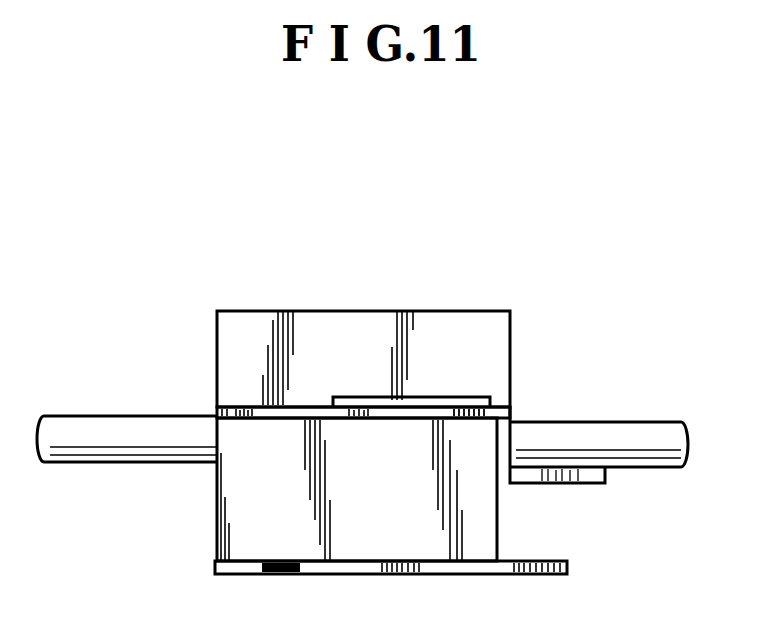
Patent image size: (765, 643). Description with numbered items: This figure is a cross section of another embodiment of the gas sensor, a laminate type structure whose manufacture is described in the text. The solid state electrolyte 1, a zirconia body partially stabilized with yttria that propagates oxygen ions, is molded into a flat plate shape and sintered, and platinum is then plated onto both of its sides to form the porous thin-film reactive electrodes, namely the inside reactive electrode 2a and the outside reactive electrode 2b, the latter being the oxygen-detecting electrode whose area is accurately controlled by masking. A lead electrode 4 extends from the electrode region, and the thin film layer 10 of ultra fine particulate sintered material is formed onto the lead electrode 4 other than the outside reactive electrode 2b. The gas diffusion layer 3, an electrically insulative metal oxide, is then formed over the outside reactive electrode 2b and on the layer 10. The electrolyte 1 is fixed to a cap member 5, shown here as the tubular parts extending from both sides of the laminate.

The solid state electrolyte 1 is at (250, 511).
The inside reactive electrode 2a is at (320, 569).
The outside reactive electrode 2b is at (252, 407).
The gas diffusion layer 3 is at (253, 330).
The lead electrode 4 is at (488, 414).
The cap member 5 is at (77, 430).
The thin film layer of ultra fine particulate sintered material 10 is at (436, 398).